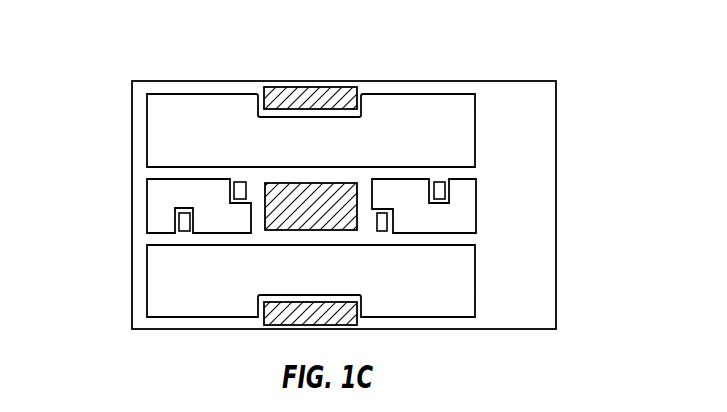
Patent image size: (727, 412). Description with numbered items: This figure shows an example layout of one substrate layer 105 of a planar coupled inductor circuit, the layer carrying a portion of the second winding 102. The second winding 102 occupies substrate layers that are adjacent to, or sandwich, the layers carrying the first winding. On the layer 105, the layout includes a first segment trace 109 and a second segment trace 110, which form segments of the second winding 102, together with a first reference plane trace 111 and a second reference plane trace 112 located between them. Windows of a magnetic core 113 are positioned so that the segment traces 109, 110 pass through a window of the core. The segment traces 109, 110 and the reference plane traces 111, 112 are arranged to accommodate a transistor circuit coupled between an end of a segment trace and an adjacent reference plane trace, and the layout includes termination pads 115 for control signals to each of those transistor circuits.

The second winding 102 is at (405, 63).
The third layer of the substrate 105 is at (556, 135).
The first segment trace 109 is at (165, 137).
The second segment trace 110 is at (157, 305).
The first reference plane trace 111 is at (158, 217).
The second reference plane trace 112 is at (460, 224).
The magnetic core 113 is at (303, 87).
The termination pads 115 is at (383, 233).